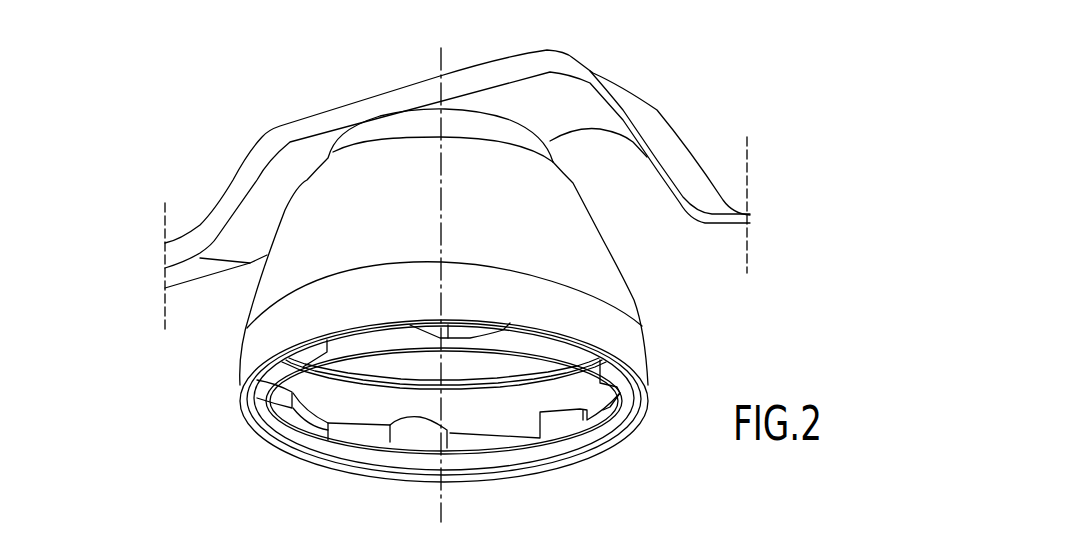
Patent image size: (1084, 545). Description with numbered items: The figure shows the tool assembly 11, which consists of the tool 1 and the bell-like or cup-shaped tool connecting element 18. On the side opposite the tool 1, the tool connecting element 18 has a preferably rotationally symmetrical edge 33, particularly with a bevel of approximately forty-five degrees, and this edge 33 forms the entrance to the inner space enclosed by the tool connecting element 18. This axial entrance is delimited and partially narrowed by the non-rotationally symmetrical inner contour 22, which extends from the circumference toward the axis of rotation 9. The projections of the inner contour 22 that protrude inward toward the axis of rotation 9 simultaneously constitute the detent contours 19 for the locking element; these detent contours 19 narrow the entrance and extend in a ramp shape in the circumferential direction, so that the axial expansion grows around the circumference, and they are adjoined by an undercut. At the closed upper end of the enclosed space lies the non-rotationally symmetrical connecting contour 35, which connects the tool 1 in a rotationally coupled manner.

The tool 1 is at (587, 107).
The axis of rotation 9 is at (440, 63).
The tool assembly 11 is at (666, 283).
The tool connecting element 18 is at (330, 200).
The detent contours 19 is at (417, 430).
The non-rotationally symmetrical inner contour 22 is at (503, 445).
The edge 33 is at (375, 462).
The non-rotationally symmetrical connecting contour 35 is at (457, 333).